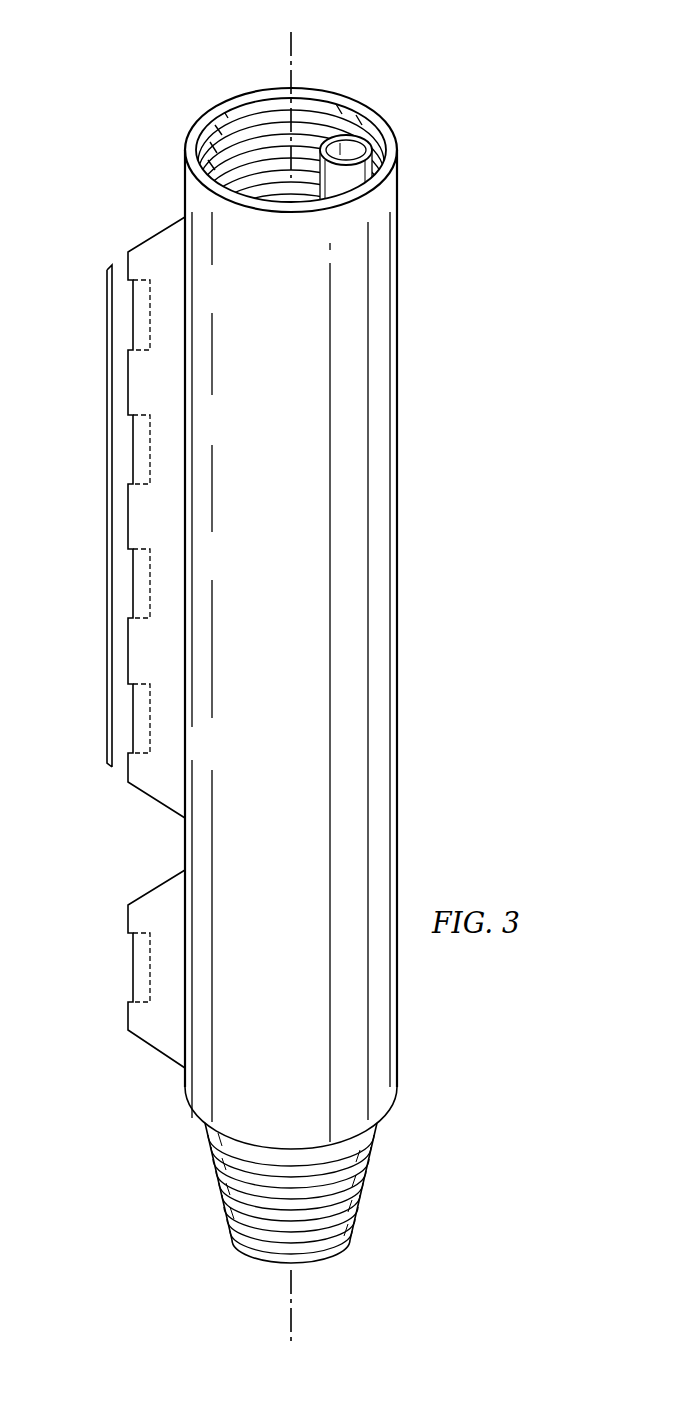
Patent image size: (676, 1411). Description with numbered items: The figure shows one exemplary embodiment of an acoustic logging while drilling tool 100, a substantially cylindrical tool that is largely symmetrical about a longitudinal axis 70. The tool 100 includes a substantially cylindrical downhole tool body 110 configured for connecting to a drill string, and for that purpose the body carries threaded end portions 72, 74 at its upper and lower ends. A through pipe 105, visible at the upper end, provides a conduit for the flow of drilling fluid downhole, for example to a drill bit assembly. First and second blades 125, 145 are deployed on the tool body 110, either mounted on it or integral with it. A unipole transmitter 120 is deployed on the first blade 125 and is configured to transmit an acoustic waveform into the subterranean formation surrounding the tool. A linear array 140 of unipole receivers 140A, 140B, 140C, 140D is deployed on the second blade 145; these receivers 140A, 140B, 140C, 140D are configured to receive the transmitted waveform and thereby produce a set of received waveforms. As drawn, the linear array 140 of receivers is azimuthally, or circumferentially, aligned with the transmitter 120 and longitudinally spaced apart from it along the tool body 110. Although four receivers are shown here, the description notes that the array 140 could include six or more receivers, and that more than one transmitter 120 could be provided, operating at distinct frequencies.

The longitudinal axis 70 is at (291, 40).
The threaded end portion 72 is at (236, 108).
The threaded end portion 74 is at (217, 1192).
The acoustic logging while drilling tool 100 is at (506, 277).
The through pipe 105 is at (350, 142).
The downhole tool body 110 is at (398, 554).
The unipole transmitter 120 is at (132, 965).
The first blade 125 is at (155, 1052).
The linear array of unipole receivers 140 is at (107, 518).
The unipole receiver 140A is at (152, 311).
The unipole receiver 140B is at (152, 446).
The unipole receiver 140C is at (152, 581).
The unipole receiver 140D is at (152, 723).
The second blade 145 is at (155, 233).